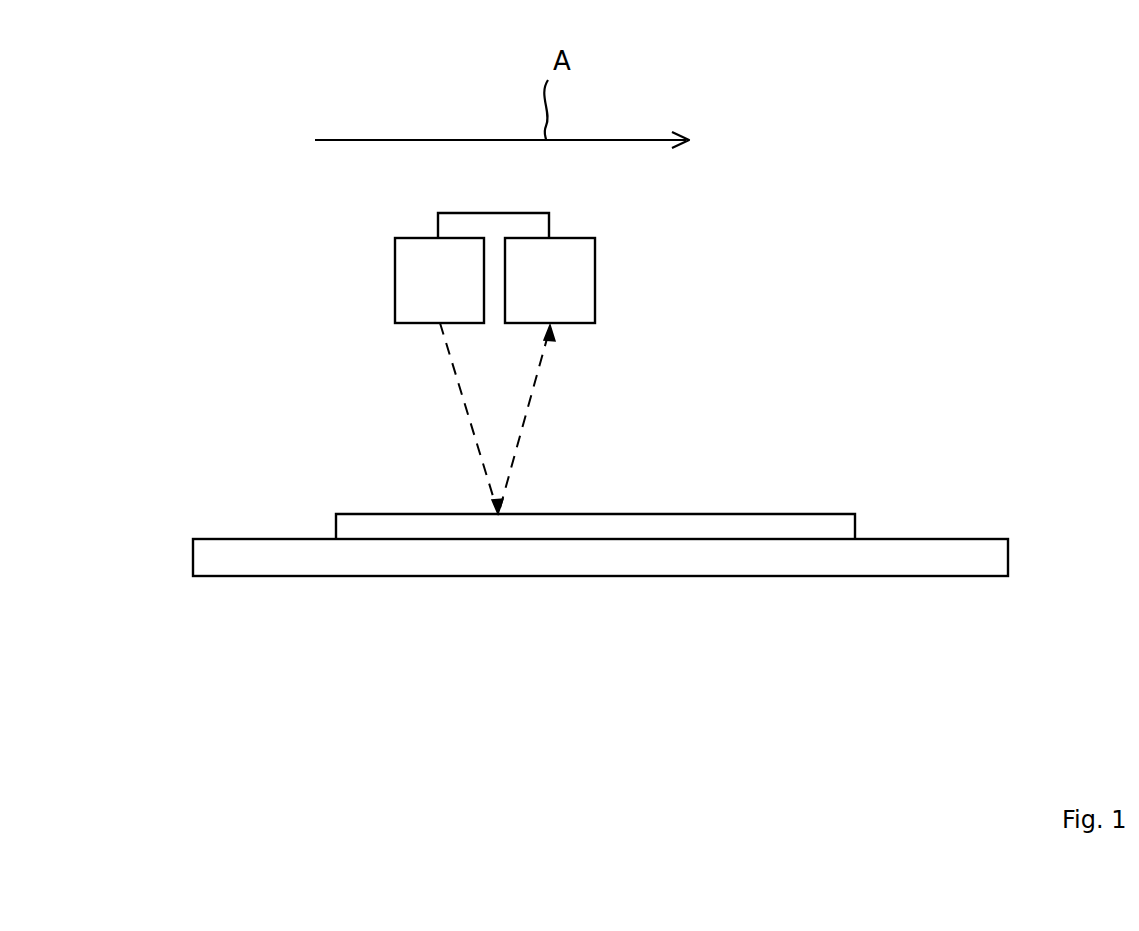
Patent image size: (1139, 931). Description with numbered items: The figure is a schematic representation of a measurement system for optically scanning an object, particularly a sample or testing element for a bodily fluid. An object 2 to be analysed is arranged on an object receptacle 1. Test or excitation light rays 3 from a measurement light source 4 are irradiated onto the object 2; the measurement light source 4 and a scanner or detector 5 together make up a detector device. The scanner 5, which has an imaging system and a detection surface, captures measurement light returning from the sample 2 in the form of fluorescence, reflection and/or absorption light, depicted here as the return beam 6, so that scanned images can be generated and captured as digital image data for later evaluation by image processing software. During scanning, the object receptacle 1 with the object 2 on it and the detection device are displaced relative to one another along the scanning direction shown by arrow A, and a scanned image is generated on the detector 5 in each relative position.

The object receptacle 1 is at (235, 562).
The object 2 is at (810, 518).
The excitation light rays 3 is at (465, 398).
The measurement light source 4 is at (410, 278).
The scanner 5 is at (575, 284).
The reflected light beam 6 is at (530, 403).